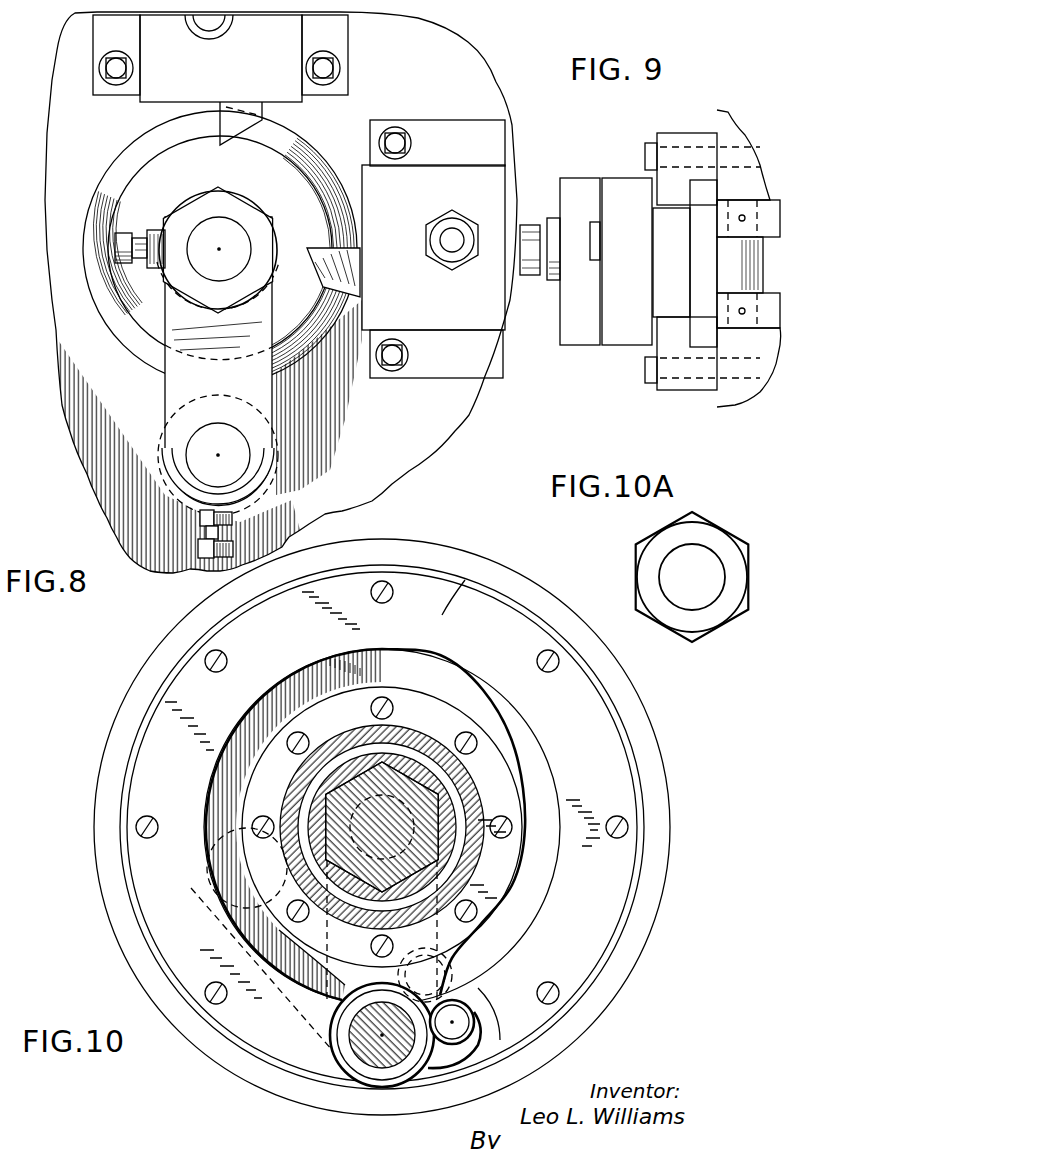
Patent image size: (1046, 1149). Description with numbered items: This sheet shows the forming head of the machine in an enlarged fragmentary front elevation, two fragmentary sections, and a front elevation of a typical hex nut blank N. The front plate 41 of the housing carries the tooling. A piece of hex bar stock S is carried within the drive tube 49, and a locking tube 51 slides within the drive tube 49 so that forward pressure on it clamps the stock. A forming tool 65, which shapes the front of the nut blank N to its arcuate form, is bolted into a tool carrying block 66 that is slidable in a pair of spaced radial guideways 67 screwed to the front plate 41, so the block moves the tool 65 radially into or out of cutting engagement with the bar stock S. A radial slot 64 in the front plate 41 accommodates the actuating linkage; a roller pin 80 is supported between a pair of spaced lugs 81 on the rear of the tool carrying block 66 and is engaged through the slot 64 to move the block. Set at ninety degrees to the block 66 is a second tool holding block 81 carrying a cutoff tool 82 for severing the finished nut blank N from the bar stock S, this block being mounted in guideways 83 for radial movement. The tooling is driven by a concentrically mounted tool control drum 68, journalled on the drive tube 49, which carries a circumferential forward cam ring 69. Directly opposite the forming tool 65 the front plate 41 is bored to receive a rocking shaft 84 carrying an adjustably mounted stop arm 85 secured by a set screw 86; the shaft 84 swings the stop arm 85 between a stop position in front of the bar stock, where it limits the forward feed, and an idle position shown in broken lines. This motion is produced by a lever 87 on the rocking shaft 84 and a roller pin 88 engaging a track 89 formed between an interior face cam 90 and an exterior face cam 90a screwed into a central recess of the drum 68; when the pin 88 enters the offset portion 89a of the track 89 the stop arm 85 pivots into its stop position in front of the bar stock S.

In FIG. 8, the front plate 41 is at (420, 440).
In FIG. 9, the front plate 41 is at (722, 398).
In FIG. 10, the drive tube 49 is at (352, 740).
In FIG. 10, the locking tube 51 is at (322, 777).
In FIG. 8, the bar stock S is at (268, 290).
In FIG. 10, the bar stock S is at (402, 778).
In FIG. 9, the radial slot 64 is at (753, 198).
In FIG. 8, the forming tool 65 is at (264, 108).
In FIG. 9, the forming tool 65 is at (592, 190).
In FIG. 8, the tool carrying block 66 is at (160, 95).
In FIG. 9, the tool carrying block 66 is at (617, 180).
In FIG. 8, the radial guideways 67 is at (100, 38).
In FIG. 9, the radial guideways 67 is at (690, 120).
In FIG. 10, the tool control drum 68 is at (518, 610).
In FIG. 10, the forward cam ring 69 is at (415, 548).
In FIG. 9, the roller pin 80 is at (760, 262).
In FIG. 8, the lugs / second tool holding block 81 is at (452, 178).
In FIG. 9, the lugs / second tool holding block 81 is at (778, 210).
In FIG. 8, the cutoff tool 82 is at (332, 248).
In FIG. 8, the guideways 83 is at (420, 128).
In FIG. 8, the rocking shaft 84 is at (250, 452).
In FIG. 10, the rocking shaft 84 is at (382, 1035).
In FIG. 8, the stop arm 85 is at (272, 388).
In FIG. 10, the stop arm 85 is at (200, 888).
In FIG. 8, the set screw 86 is at (240, 540).
In FIG. 10, the lever 87 is at (437, 965).
In FIG. 10, the roller pin 88 is at (468, 1012).
In FIG. 10, the track 89 is at (517, 730).
In FIG. 10, the offset portion 89a is at (478, 988).
In FIG. 10, the interior face cam 90 is at (503, 788).
In FIG. 10, the exterior face cam 90a is at (455, 600).
In FIG. 10A, the nut blank N is at (735, 540).